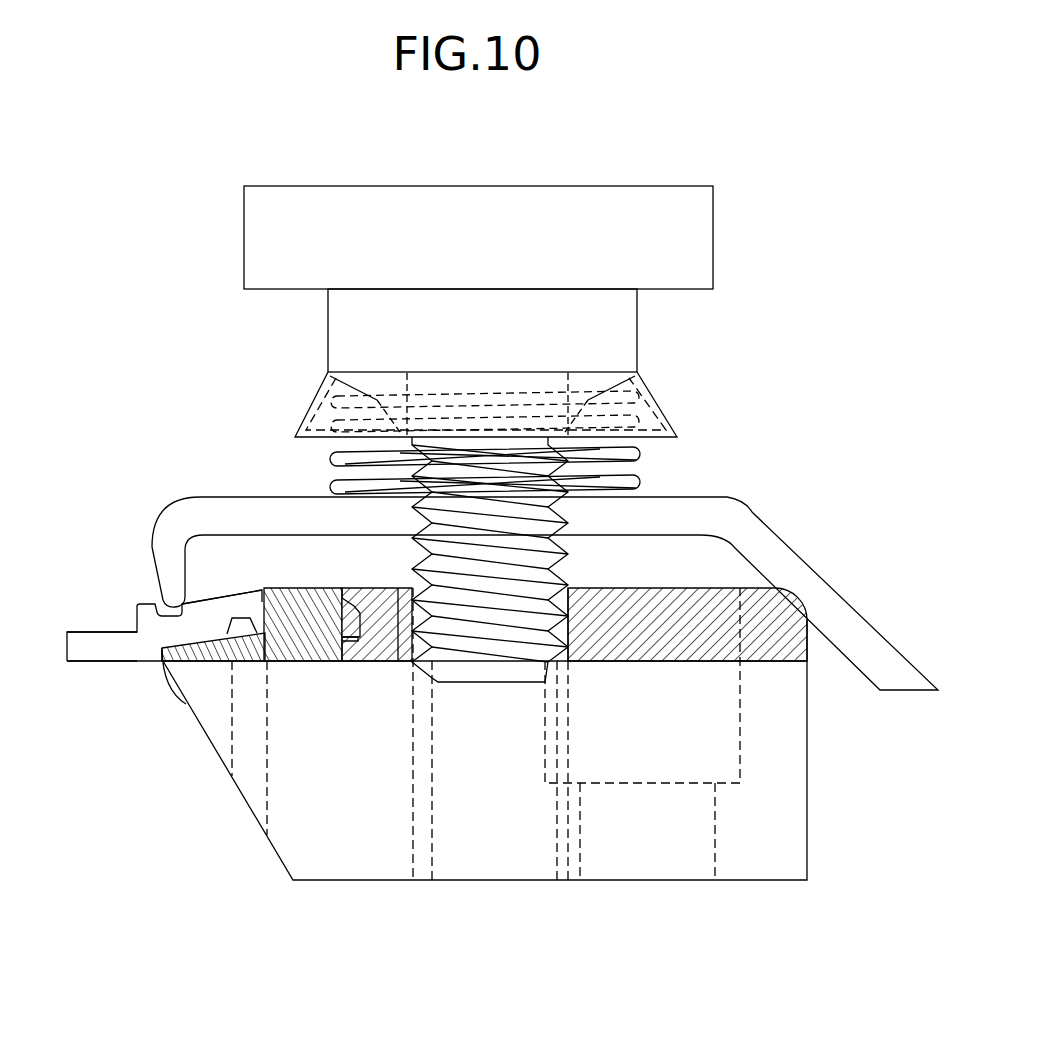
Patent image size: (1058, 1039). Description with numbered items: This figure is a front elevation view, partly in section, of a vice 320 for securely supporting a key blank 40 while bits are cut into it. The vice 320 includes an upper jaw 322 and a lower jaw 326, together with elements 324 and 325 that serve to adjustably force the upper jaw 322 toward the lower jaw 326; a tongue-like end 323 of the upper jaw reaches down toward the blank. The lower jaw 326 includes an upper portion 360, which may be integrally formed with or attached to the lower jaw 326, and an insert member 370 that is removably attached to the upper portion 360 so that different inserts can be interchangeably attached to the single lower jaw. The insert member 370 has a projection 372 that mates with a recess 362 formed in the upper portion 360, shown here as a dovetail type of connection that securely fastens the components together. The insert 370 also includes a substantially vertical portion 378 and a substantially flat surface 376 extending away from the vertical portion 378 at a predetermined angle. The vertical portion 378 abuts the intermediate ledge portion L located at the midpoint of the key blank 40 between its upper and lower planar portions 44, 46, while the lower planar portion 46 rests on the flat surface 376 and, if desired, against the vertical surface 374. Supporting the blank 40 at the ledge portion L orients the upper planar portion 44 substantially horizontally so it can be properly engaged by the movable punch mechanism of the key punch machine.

The vice 320 is at (624, 172).
The element 324 is at (685, 235).
The element 325 is at (668, 408).
The upper jaw 322 is at (727, 508).
The tongue 323 is at (152, 541).
The key blank 40 is at (75, 624).
The intermediate ledge portion L is at (150, 651).
The upper planar portion 44 is at (78, 652).
The lower planar portion 46 is at (198, 615).
The vertical surface 374 is at (258, 588).
The projection 372 is at (345, 614).
The recess 362 is at (380, 625).
The upper portion 360 is at (398, 665).
The insert member 370 is at (247, 665).
The flat surface 376 is at (217, 648).
The vertical portion 378 is at (185, 704).
The lower jaw 326 is at (313, 857).